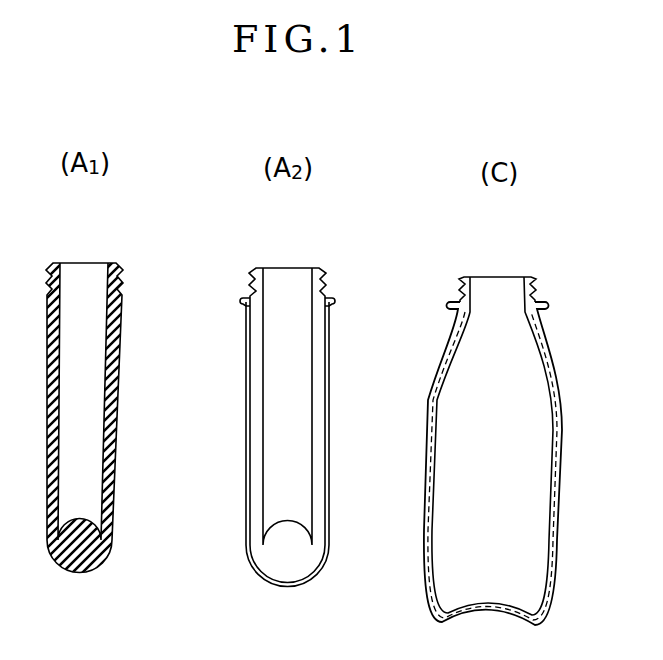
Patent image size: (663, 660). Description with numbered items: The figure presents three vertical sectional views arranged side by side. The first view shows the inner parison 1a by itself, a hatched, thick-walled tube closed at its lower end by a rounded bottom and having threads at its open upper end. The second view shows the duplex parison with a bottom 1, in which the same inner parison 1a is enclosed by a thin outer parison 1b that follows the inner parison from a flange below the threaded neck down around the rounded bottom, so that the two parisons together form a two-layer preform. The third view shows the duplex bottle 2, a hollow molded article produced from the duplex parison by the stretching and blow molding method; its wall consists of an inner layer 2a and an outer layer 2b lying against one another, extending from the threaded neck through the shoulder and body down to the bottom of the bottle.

The duplex parison with a bottom 1 is at (246, 277).
The inner parison 1a is at (113, 437).
The outer parison 1b is at (248, 396).
The duplex bottle 2 is at (454, 292).
The inner layer 2a is at (437, 386).
The outer layer 2b is at (424, 432).